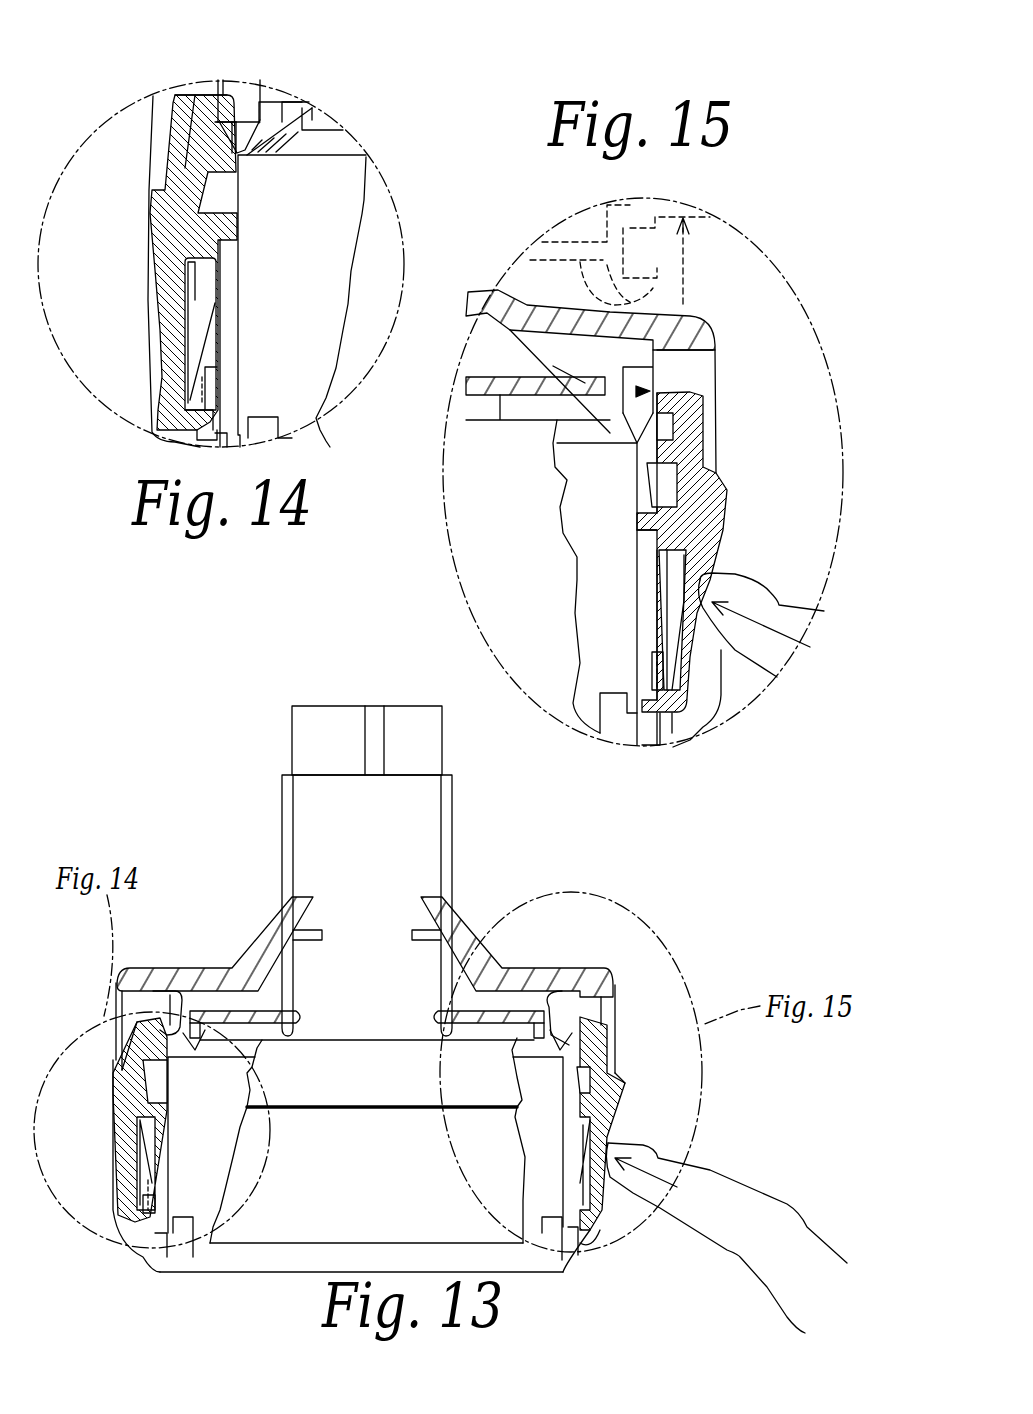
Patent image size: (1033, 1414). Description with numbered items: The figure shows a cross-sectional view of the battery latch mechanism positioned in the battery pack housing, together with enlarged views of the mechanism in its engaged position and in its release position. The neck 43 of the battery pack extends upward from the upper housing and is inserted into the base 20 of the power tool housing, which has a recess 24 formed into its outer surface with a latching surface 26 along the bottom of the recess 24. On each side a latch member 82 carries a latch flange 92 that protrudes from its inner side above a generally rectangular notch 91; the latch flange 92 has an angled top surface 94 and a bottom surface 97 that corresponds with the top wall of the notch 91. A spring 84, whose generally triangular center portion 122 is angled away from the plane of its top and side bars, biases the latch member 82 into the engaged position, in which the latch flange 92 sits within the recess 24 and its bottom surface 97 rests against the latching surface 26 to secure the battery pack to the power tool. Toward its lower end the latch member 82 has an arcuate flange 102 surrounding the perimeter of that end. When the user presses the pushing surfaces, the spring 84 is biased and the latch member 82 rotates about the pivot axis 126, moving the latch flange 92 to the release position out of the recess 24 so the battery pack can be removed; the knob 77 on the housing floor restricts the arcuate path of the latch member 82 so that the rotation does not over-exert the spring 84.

In FIG. 14, the base 20 is at (269, 107).
In FIG. 15, the base 20 is at (643, 331).
In FIG. 13, the base 20 is at (210, 968).
In FIG. 14, the recess 24 is at (280, 120).
In FIG. 15, the recess 24 is at (650, 376).
In FIG. 13, the recess 24 is at (367, 1024).
In FIG. 14, the latching surface 26 is at (242, 112).
In FIG. 15, the latching surface 26 is at (623, 410).
In FIG. 13, the latching surface 26 is at (183, 1038).
In FIG. 13, the neck 43 is at (442, 802).
In FIG. 13, the knob 77 is at (193, 1215).
In FIG. 14, the latch member 82 is at (170, 268).
In FIG. 15, the latch member 82 is at (727, 497).
In FIG. 13, the latch member 82 is at (622, 1082).
In FIG. 14, the spring 84 is at (216, 314).
In FIG. 15, the spring 84 is at (667, 623).
In FIG. 13, the spring 84 is at (587, 1163).
In FIG. 14, the notch 91 is at (180, 100).
In FIG. 14, the latch flange 92 is at (209, 88).
In FIG. 13, the latch flange 92 is at (607, 1020).
In FIG. 14, the angled top surface 94 is at (226, 118).
In FIG. 15, the angled top surface 94 is at (655, 387).
In FIG. 14, the bottom surface 97 is at (259, 132).
In FIG. 15, the bottom surface 97 is at (677, 427).
In FIG. 13, the bottom surface 97 is at (177, 991).
In FIG. 13, the arcuate flange 102 is at (150, 1213).
In FIG. 14, the center portion 122 is at (209, 357).
In FIG. 15, the center portion 122 is at (660, 653).
In FIG. 14, the pivot axis 126 is at (232, 246).
In FIG. 15, the pivot axis 126 is at (657, 533).
In FIG. 13, the pivot axis 126 is at (155, 1108).